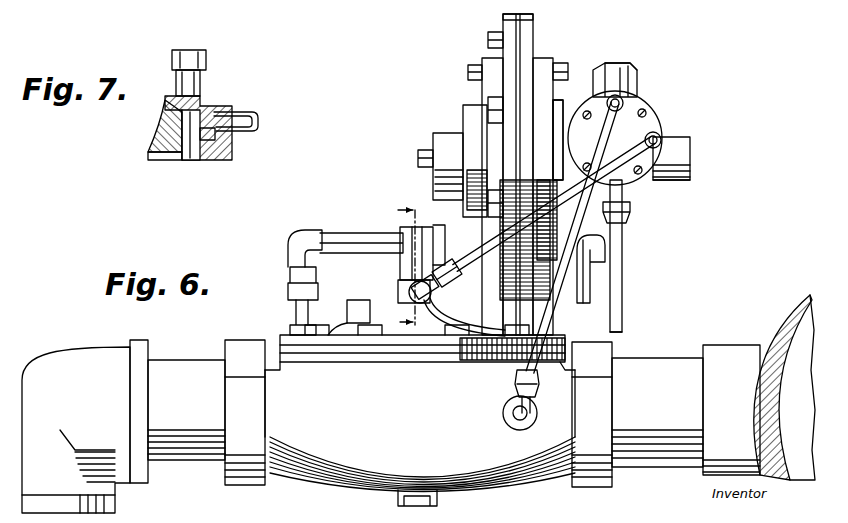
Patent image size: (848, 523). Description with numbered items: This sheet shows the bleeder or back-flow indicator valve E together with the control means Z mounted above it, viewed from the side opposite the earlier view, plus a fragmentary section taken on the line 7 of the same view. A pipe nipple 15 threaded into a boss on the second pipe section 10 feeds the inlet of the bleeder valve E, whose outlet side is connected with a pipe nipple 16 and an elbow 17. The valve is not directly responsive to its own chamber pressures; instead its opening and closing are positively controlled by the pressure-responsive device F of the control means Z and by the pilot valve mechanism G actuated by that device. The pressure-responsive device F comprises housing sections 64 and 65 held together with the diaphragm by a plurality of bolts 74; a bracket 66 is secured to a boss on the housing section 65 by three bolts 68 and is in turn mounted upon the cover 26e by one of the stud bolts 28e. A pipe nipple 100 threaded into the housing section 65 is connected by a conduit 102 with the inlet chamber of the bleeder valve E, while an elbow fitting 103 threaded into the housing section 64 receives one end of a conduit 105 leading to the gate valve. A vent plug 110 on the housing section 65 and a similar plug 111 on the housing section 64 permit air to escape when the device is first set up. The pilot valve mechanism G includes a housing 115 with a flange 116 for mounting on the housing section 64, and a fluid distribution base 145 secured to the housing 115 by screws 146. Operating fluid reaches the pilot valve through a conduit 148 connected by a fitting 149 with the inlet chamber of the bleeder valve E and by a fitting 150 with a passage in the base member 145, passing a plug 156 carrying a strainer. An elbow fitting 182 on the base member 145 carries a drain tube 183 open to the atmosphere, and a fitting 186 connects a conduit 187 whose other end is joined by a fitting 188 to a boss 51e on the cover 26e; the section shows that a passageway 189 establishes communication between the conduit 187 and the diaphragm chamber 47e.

In FIG. 7, the bleeder or back-flow indicator valve E is at (208, 58).
In FIG. 6, the bleeder or back-flow indicator valve E is at (340, 490).
In FIG. 7, the boss 51e is at (206, 100).
In FIG. 6, the boss 51e is at (404, 280).
In FIG. 7, the cover 26e is at (162, 128).
In FIG. 6, the cover 26e is at (282, 338).
In FIG. 7, the fitting 188 is at (258, 118).
In FIG. 6, the fitting 188 is at (410, 296).
In FIG. 7, the diaphragm chamber 47e is at (174, 155).
In FIG. 7, the passageway 189 is at (214, 142).
In FIG. 6, the elbow 17 is at (72, 352).
In FIG. 6, the pipe nipple 16 is at (188, 360).
In FIG. 6, the stud bolt 28e is at (383, 362).
In FIG. 6, the pipe nipple 15 is at (672, 466).
In FIG. 6, the second pipe section 10 is at (782, 320).
In FIG. 6, the pressure-responsive device F is at (536, 21).
In FIG. 6, the housing section 64 is at (534, 57).
In FIG. 6, the housing section 65 is at (503, 20).
In FIG. 6, the bolts 74 is at (488, 42).
In FIG. 6, the vent plug 110 is at (468, 73).
In FIG. 6, the control means Z is at (443, 133).
In FIG. 6, the plug 111 is at (568, 75).
In FIG. 6, the flange 116 is at (556, 114).
In FIG. 6, the section line 7 is at (405, 268).
In FIG. 6, the pipe nipple 100 is at (360, 228).
In FIG. 6, the conduit 102 is at (290, 290).
In FIG. 6, the bracket 66 is at (355, 305).
In FIG. 6, the bolts 68 is at (440, 212).
In FIG. 6, the conduit 187 is at (478, 310).
In FIG. 6, the conduit 148 is at (513, 377).
In FIG. 6, the fitting 149 is at (504, 416).
In FIG. 6, the pilot valve mechanism G is at (692, 157).
In FIG. 6, the pilot valve housing 115 is at (637, 82).
In FIG. 6, the plug 156 is at (622, 68).
In FIG. 6, the fitting 150 is at (624, 102).
In FIG. 6, the fitting 186 is at (660, 135).
In FIG. 6, the screws 146 is at (646, 115).
In FIG. 6, the fluid distribution base 145 is at (672, 190).
In FIG. 6, the conduit 105 is at (623, 282).
In FIG. 6, the elbow fitting 182 is at (630, 212).
In FIG. 6, the drain tube 183 is at (623, 320).
In FIG. 6, the elbow fitting 103 is at (575, 290).